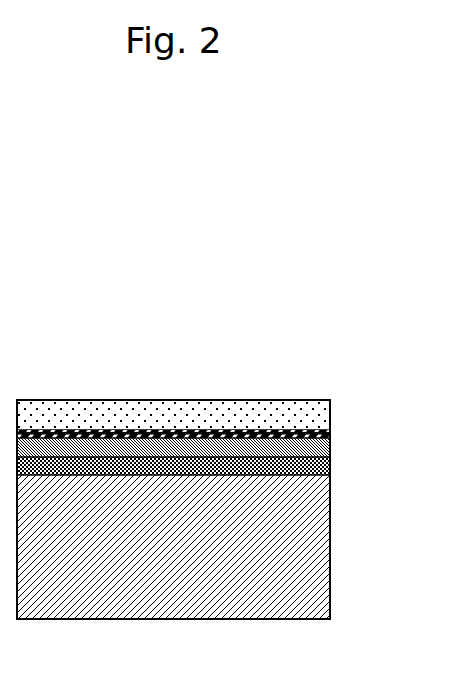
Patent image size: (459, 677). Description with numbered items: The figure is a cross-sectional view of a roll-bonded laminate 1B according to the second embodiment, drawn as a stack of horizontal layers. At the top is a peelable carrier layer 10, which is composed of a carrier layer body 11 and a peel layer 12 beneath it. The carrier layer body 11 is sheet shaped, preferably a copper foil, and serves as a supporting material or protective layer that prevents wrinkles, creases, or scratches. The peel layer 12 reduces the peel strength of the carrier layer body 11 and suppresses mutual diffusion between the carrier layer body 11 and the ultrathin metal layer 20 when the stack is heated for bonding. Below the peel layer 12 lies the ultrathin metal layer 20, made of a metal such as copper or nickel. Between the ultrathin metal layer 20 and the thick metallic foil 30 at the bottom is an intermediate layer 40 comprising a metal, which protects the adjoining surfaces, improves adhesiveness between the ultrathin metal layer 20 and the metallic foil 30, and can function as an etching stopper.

The roll-bonded laminate 1B is at (327, 381).
The carrier layer 10 is at (398, 403).
The carrier layer body 11 is at (322, 411).
The peel layer 12 is at (323, 433).
The ultrathin metal layer 20 is at (327, 448).
The intermediate layer 40 is at (325, 466).
The metallic foil 30 is at (327, 544).